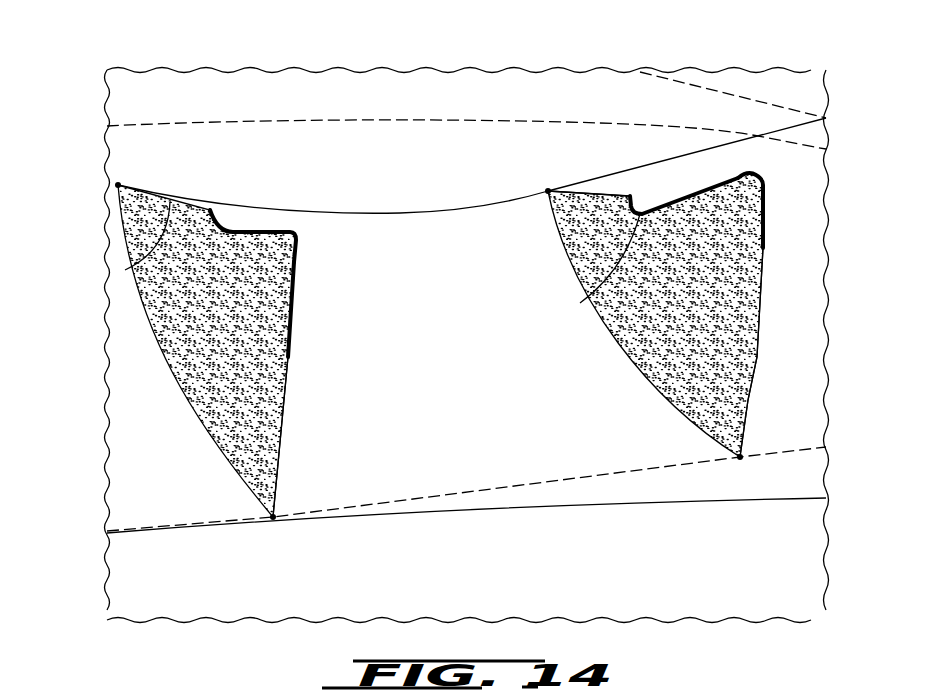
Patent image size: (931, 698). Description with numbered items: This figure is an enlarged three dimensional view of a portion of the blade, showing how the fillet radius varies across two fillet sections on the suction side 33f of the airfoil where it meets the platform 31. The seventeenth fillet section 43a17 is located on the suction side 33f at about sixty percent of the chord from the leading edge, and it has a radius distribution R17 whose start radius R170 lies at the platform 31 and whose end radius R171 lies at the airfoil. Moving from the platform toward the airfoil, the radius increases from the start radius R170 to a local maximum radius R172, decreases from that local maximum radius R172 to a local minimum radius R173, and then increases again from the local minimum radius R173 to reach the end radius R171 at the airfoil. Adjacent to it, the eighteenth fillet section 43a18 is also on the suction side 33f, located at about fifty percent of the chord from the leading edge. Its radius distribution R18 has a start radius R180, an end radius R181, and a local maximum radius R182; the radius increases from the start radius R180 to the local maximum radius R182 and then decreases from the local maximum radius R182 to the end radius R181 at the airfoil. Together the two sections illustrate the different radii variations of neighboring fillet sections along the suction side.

The eighteenth fillet section 43a18 is at (219, 273).
The radius distribution R18 is at (219, 273).
The seventeenth fillet section 43a17 is at (715, 230).
The radius distribution R17 is at (715, 230).
The suction side 33f is at (353, 157).
The platform 31 is at (727, 562).
The end radius R171 is at (588, 195).
The local maximum radius R172 is at (757, 172).
The local minimum radius R173 is at (580, 303).
The start radius R170 is at (748, 360).
The start radius R180 is at (285, 443).
The end radius R181 is at (125, 270).
The local maximum radius R182 is at (298, 233).